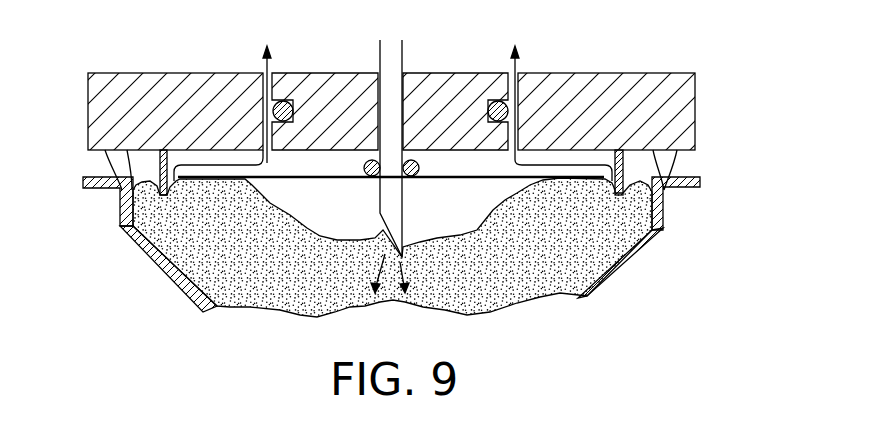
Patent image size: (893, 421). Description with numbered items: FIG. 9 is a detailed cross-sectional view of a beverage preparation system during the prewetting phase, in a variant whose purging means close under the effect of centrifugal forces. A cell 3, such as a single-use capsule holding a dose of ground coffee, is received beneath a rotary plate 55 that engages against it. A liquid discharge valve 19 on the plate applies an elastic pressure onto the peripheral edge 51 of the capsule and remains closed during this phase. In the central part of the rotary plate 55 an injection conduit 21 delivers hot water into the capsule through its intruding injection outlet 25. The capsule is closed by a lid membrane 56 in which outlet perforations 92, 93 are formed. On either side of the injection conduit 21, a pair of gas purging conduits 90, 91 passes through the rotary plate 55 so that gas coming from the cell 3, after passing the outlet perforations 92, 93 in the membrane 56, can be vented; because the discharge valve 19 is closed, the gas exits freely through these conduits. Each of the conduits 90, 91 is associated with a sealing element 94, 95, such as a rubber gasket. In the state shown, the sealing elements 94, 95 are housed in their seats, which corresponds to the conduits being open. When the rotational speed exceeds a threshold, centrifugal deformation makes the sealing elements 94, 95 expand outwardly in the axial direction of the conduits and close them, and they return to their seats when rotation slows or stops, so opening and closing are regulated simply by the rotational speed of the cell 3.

The cell 3 is at (158, 276).
The liquid discharge valve 19 is at (699, 160).
The injection conduit 21 is at (404, 50).
The injection outlet 25 is at (387, 228).
The peripheral edge 51 is at (114, 178).
The rotary plate 55 is at (708, 84).
The lid membrane 56 is at (328, 176).
The gas purging conduit 90 is at (267, 66).
The gas purging conduit 91 is at (515, 64).
The outlet perforation 92 is at (125, 212).
The outlet perforation 93 is at (662, 210).
The sealing element 94 is at (284, 100).
The sealing element 95 is at (497, 100).